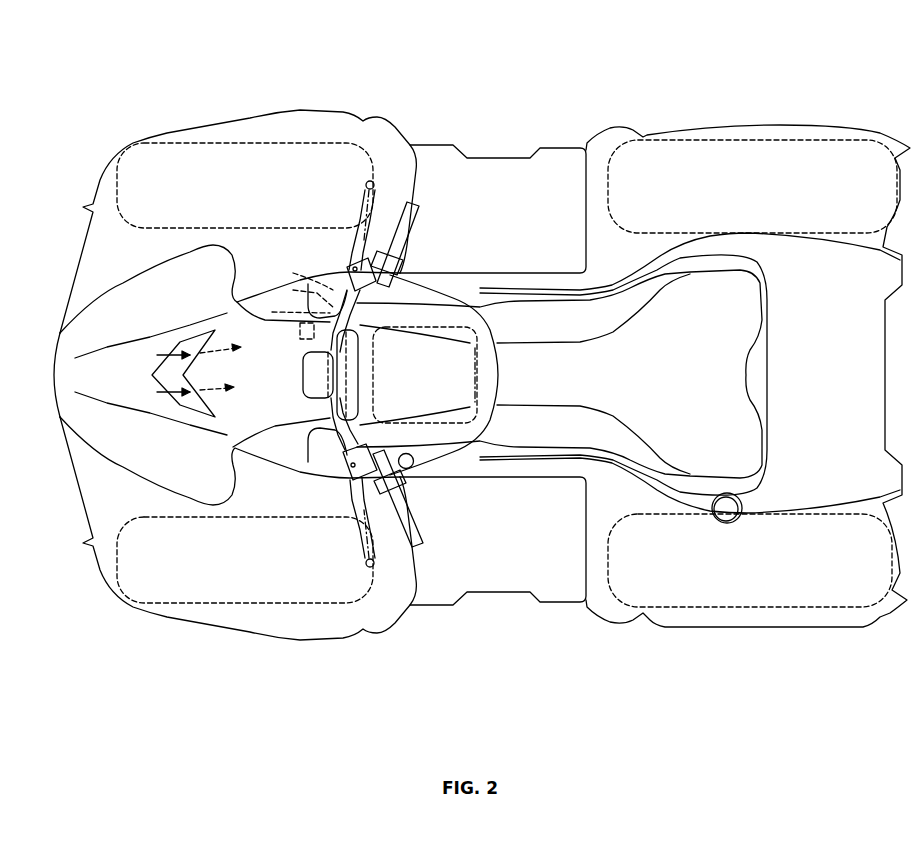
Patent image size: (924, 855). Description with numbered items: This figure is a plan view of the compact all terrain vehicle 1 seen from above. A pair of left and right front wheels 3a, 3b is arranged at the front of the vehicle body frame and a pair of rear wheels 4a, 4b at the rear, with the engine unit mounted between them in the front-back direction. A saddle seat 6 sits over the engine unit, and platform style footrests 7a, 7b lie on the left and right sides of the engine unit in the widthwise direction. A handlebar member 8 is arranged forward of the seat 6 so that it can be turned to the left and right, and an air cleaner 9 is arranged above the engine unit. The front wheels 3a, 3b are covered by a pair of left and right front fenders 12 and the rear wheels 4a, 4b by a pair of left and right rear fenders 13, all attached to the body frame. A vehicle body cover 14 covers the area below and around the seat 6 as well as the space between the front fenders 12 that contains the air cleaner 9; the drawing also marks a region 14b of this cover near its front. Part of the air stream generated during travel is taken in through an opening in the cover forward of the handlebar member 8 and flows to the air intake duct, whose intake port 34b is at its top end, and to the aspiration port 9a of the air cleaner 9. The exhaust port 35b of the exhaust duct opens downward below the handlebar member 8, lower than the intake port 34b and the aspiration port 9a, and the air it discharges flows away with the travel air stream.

The compact all terrain vehicle 1 is at (508, 84).
The front wheel 3a is at (180, 608).
The front wheel 3b is at (183, 130).
The rear wheel 4a is at (790, 610).
The rear wheel 4b is at (793, 127).
The saddle seat 6 is at (737, 330).
The footrest 7a is at (497, 577).
The footrest 7b is at (500, 173).
The handlebar member 8 is at (417, 220).
The air cleaner 9 is at (480, 373).
The aspiration port 9a is at (414, 466).
The front fender 12 is at (285, 113).
The rear fender 13 is at (697, 130).
The vehicle body cover 14 is at (247, 410).
The air intake louver 14b is at (197, 405).
The intake port 34b is at (307, 333).
The exhaust port 35b is at (293, 288).